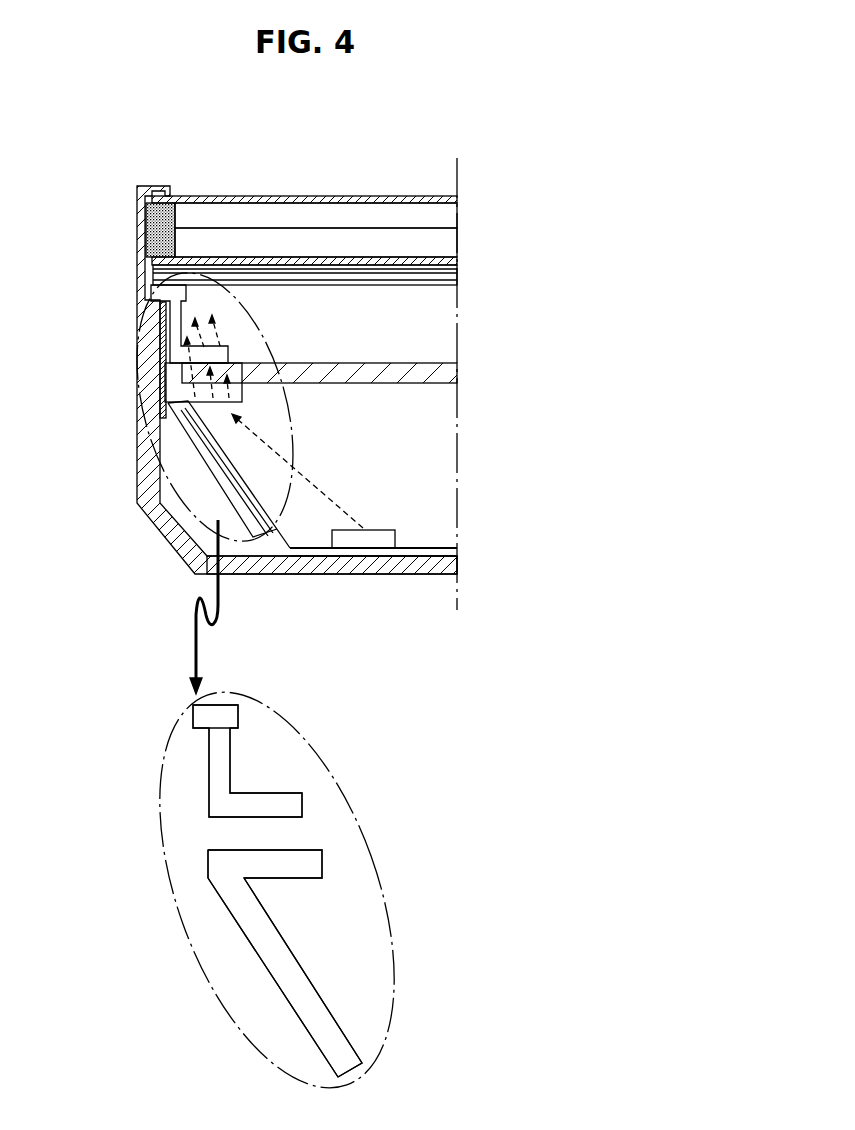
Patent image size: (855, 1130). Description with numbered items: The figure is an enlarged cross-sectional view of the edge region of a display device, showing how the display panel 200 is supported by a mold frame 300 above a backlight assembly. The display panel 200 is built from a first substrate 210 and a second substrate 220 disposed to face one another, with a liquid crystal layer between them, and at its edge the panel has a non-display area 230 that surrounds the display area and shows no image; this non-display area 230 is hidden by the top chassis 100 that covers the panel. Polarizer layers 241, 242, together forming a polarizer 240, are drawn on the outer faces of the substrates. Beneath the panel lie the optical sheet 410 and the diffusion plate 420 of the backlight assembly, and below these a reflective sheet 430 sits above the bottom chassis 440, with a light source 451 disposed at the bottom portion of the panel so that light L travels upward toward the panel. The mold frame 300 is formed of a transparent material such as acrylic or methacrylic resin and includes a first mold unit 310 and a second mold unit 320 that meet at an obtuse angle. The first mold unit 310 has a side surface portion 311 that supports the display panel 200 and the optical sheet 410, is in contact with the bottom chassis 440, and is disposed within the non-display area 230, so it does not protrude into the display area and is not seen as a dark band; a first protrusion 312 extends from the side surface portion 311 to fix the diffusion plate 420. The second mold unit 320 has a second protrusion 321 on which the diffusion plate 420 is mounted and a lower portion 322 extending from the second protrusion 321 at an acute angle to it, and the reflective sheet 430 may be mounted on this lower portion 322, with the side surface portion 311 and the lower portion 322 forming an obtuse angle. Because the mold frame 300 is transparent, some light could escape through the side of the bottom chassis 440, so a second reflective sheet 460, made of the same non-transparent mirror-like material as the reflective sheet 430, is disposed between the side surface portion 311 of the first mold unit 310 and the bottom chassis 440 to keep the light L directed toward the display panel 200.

The top chassis 100 is at (143, 190).
The display panel 200 is at (532, 205).
The first substrate 210 is at (443, 242).
The second substrate 220 is at (443, 217).
The non-display area 230 is at (158, 219).
The polarizer 240 is at (388, 143).
The lower polarizer 241 is at (370, 262).
The upper polarizer 242 is at (313, 200).
The mold frame 300 is at (70, 342).
The first mold unit 310 is at (180, 349).
The side surface portion 311 is at (227, 732).
The first protrusion 312 is at (277, 803).
The second mold unit 320 is at (185, 390).
The second protrusion 321 is at (307, 863).
The lower portion 322 is at (303, 998).
The optical sheet 410 is at (463, 288).
The diffusion plate 420 is at (437, 375).
The reflective sheet 430 is at (417, 553).
The bottom chassis 440 is at (353, 563).
The light source 451 is at (383, 538).
The reflective sheet 460 is at (163, 310).
The light L is at (308, 480).